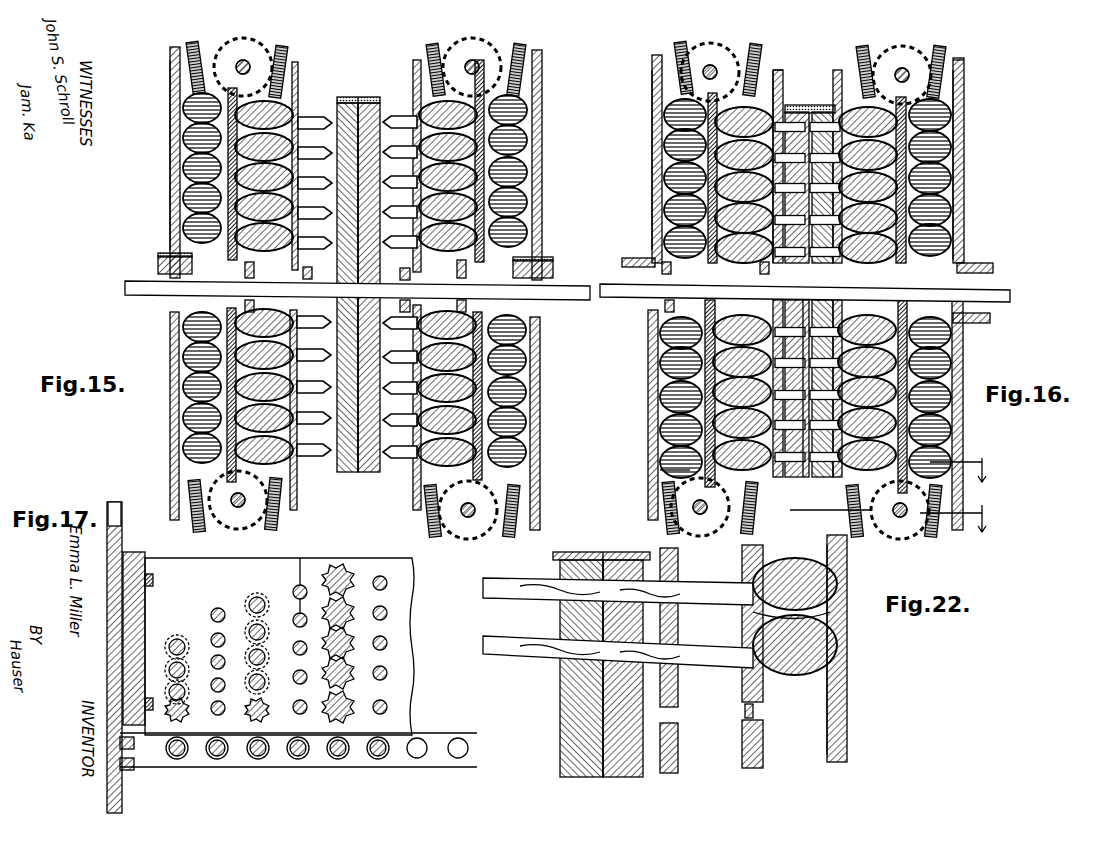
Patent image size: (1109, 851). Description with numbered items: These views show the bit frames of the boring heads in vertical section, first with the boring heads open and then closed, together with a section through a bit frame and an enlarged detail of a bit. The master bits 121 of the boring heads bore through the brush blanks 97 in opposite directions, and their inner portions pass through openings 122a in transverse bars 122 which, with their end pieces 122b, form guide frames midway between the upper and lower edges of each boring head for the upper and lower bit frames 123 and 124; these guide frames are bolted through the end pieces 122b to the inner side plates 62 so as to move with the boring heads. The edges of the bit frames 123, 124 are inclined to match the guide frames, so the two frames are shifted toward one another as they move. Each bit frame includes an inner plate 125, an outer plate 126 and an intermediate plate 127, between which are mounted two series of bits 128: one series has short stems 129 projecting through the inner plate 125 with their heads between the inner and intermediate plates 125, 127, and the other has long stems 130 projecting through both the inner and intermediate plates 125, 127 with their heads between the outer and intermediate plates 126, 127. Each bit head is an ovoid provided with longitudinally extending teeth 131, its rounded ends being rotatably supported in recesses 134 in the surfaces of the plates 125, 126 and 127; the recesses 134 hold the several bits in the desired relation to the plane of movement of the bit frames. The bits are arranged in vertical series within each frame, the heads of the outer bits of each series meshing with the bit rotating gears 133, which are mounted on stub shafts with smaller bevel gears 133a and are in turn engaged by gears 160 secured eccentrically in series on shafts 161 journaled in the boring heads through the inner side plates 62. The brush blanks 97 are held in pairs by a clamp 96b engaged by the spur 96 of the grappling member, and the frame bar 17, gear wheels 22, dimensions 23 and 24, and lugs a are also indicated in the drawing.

In FIG. 15, the spur 96 is at (358, 268).
In FIG. 16, the clamp 96b is at (807, 273).
In FIG. 22, the clamp 96b is at (601, 653).
In FIG. 15, the brush blank 97 is at (368, 112).
In FIG. 16, the brush blank 97 is at (803, 478).
In FIG. 22, the brush blank 97 is at (556, 570).
In FIG. 15, the master bit 121 is at (125, 287).
In FIG. 16, the master bit 121 is at (630, 300).
In FIG. 17, the master bit 121 is at (217, 758).
In FIG. 15, the transverse bar 122 is at (158, 266).
In FIG. 16, the transverse bar 122 is at (634, 258).
In FIG. 17, the transverse bar 122 is at (398, 760).
In FIG. 15, the opening 122a is at (351, 286).
In FIG. 16, the opening 122a is at (826, 292).
In FIG. 17, the opening 122a is at (305, 760).
In FIG. 17, the end piece 122b is at (135, 768).
In FIG. 15, the upper bit frame 123 is at (162, 151).
In FIG. 16, the upper bit frame 123 is at (642, 170).
In FIG. 22, the upper bit frame 123 is at (854, 700).
In FIG. 15, the lower bit frame 124 is at (162, 433).
In FIG. 16, the lower bit frame 124 is at (641, 391).
In FIG. 17, the lower bit frame 124 is at (123, 600).
In FIG. 15, the inner plate 125 is at (356, 305).
In FIG. 16, the inner plate 125 is at (780, 90).
In FIG. 17, the inner plate 125 is at (410, 674).
In FIG. 22, the inner plate 125 is at (678, 704).
In FIG. 15, the outer plate 126 is at (184, 210).
In FIG. 16, the outer plate 126 is at (664, 104).
In FIG. 22, the outer plate 126 is at (847, 660).
In FIG. 15, the intermediate plate 127 is at (170, 114).
In FIG. 16, the intermediate plate 127 is at (973, 210).
In FIG. 22, the intermediate plate 127 is at (763, 760).
In FIG. 15, the bit 128 is at (184, 184).
In FIG. 16, the bit 128 is at (664, 130).
In FIG. 17, the bit 128 is at (180, 633).
In FIG. 22, the bit 128 is at (750, 672).
In FIG. 15, the short stem 129 is at (356, 289).
In FIG. 16, the short stem 129 is at (805, 288).
In FIG. 17, the long stem 130 is at (218, 608).
In FIG. 22, the long stem 130 is at (515, 578).
In FIG. 22, the teeth 131 is at (798, 563).
In FIG. 15, the bit rotating gear 133 is at (186, 46).
In FIG. 16, the bit rotating gear 133 is at (676, 46).
In FIG. 15, the bevel gear 133a is at (546, 497).
In FIG. 16, the bevel gear 133a is at (950, 90).
In FIG. 15, the recess 134 is at (268, 252).
In FIG. 16, the recess 134 is at (716, 287).
In FIG. 22, the recess 134 is at (742, 562).
In FIG. 15, the gear 160 is at (278, 50).
In FIG. 16, the gear 160 is at (690, 62).
In FIG. 15, the shaft 161 is at (272, 70).
In FIG. 16, the shaft 161 is at (700, 76).
In FIG. 16, the frame bar 17 is at (918, 175).
In FIG. 17, the gear wheel 22 is at (259, 632).
In FIG. 16, the dimension 23 is at (804, 470).
In FIG. 16, the dimension 24 is at (899, 519).
In FIG. 17, the inner side plate 62 is at (115, 504).
In FIG. 17, the lug a is at (120, 629).